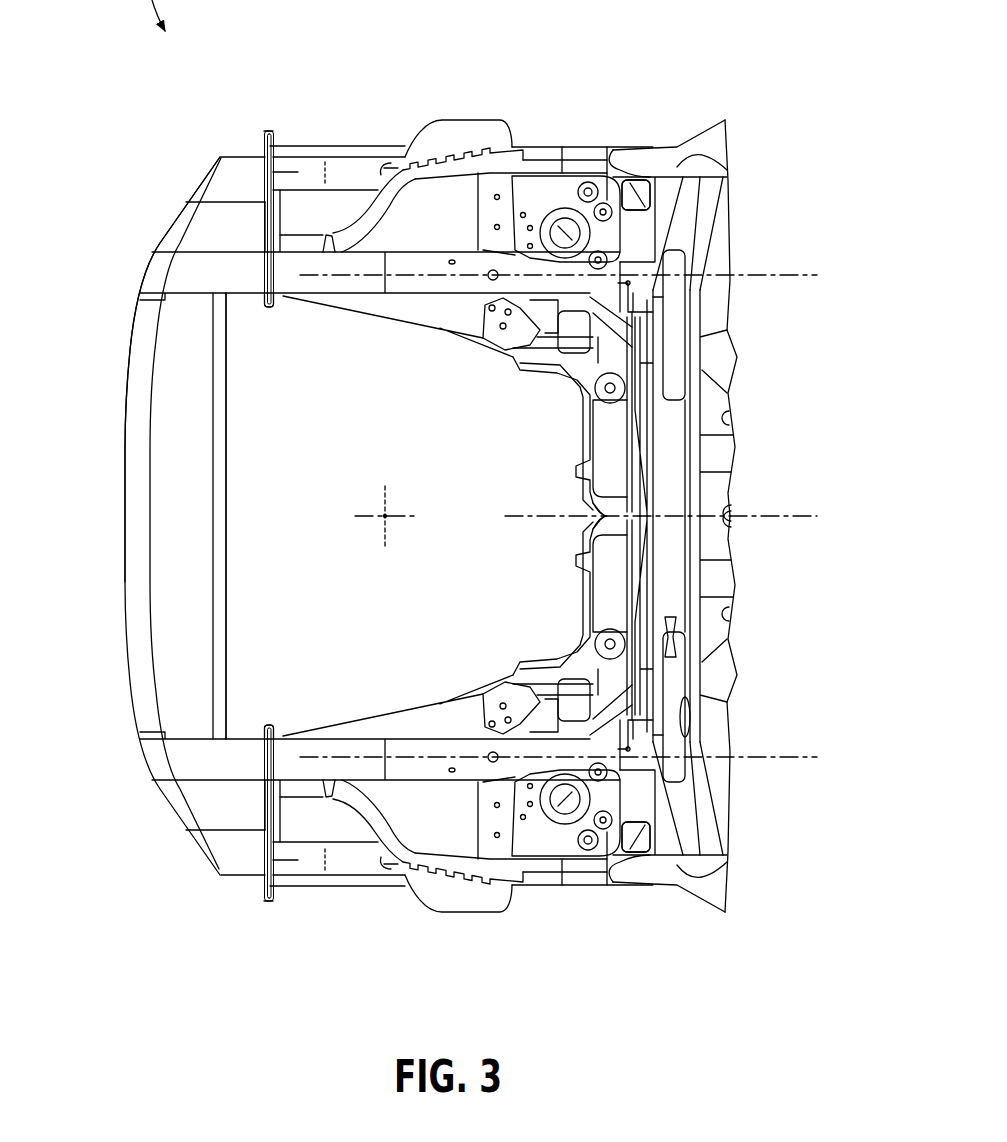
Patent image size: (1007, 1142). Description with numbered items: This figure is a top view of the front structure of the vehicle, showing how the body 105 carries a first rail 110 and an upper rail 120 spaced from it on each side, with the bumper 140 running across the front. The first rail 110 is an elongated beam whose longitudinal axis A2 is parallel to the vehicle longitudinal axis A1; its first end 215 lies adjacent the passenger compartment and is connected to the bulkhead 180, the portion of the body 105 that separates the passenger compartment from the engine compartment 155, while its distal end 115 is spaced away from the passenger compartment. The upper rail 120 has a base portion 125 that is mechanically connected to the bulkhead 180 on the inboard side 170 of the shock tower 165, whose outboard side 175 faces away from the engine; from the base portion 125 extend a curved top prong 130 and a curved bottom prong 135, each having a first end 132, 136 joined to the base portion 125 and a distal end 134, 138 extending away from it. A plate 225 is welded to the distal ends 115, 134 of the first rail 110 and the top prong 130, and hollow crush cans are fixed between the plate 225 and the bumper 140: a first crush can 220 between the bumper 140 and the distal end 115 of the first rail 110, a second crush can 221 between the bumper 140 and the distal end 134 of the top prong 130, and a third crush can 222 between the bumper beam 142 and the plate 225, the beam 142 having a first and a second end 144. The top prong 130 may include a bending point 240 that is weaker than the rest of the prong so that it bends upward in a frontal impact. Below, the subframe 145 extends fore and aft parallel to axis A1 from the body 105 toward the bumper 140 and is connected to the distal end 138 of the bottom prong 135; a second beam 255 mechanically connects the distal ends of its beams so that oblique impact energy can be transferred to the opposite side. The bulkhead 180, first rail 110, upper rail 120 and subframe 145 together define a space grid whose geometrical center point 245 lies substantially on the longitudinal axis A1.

The body 105 is at (658, 130).
The first rail 110 is at (423, 297).
The distal end 115 is at (281, 305).
The upper rail 120 is at (529, 131).
The base portion 125 is at (677, 163).
The top prong 130 is at (372, 145).
The first end 132 is at (633, 173).
The distal end 134 is at (283, 172).
The bottom prong 135 is at (396, 211).
The first end 136 is at (633, 173).
The distal end 138 is at (323, 160).
The bumper 140 is at (96, 439).
The beam 142 is at (125, 565).
The second end 144 is at (200, 172).
The subframe 145 is at (509, 379).
The engine compartment 155 is at (263, 442).
The shock tower 165 is at (565, 232).
The inboard side 170 is at (517, 318).
The outboard side 175 is at (550, 178).
The bulkhead 180 is at (578, 500).
The first end 215 is at (648, 297).
The first crush can 220 is at (192, 275).
The second crush can 221 is at (243, 178).
The third crush can 222 is at (218, 228).
The plate 225 is at (269, 310).
The bending point 240 is at (385, 165).
The geometrical center point 245 is at (388, 515).
The second beam 255 is at (227, 514).
The vehicle longitudinal axis A1 is at (604, 515).
The longitudinal axis A2 is at (576, 514).